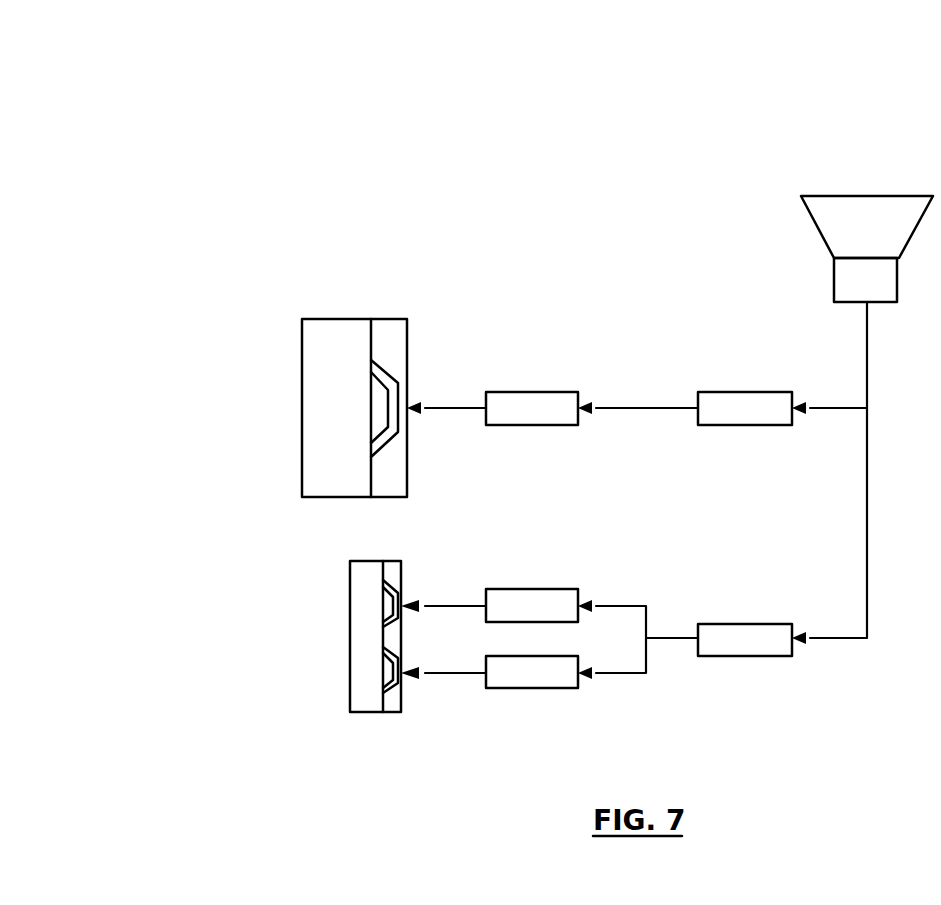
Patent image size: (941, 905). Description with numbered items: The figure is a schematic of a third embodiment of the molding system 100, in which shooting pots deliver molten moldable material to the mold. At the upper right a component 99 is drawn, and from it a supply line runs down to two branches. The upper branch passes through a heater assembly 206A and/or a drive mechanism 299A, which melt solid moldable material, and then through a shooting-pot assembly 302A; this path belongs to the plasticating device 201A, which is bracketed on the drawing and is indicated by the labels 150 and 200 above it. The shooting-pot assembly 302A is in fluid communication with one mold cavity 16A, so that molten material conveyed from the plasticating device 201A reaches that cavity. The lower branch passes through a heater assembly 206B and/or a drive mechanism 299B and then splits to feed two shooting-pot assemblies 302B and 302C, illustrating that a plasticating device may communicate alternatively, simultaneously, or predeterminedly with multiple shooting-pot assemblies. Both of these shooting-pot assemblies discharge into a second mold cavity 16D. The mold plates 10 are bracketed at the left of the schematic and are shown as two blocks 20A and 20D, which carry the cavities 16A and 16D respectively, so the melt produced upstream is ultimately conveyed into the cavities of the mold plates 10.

The mold plates 10 is at (208, 370).
The mold cavity 16A is at (392, 393).
The mold cavity 16D is at (393, 607).
The light guide panel 20A is at (302, 391).
The light guide panel 20D is at (350, 581).
The light source 99 is at (857, 196).
The molding system 100 is at (826, 88).
The optical system 150 is at (566, 196).
The optical assembly 200 is at (634, 265).
The plasticating device 201A is at (815, 324).
The shooting-pot assembly 302A is at (532, 392).
The shooting-pot assembly 302B is at (530, 589).
The shooting-pot assembly 302C is at (534, 688).
The heater assembly 206A is at (719, 373).
The drive mechanism 299A is at (734, 392).
The heater assembly 206B is at (737, 604).
The drive mechanism 299B is at (745, 624).